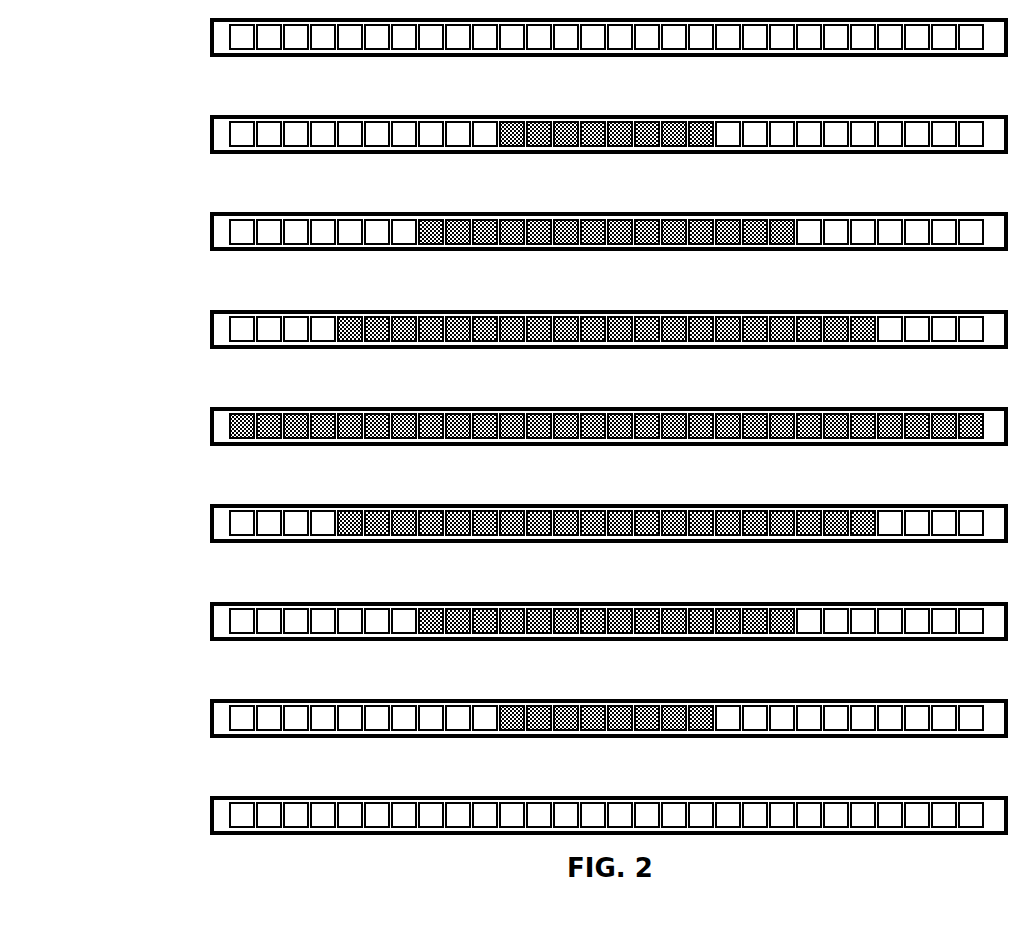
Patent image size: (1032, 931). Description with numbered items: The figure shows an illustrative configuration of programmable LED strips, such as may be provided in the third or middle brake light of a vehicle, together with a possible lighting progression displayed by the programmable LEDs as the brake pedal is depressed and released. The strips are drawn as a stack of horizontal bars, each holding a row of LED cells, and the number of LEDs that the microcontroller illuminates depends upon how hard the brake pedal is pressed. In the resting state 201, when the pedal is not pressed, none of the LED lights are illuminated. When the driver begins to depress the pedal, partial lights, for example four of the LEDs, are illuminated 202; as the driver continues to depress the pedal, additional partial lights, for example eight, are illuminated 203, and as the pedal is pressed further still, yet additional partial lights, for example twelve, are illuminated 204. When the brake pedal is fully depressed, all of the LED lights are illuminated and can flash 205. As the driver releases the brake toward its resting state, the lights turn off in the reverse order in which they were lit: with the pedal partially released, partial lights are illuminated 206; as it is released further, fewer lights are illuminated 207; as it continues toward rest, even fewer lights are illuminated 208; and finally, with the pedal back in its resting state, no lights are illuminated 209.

The resting state illumination configuration 201 is at (192, 38).
The partial lights illuminated configuration 202 is at (192, 135).
The additional partial lights illuminated configuration 203 is at (192, 232).
The further additional partial lights illuminated configuration 204 is at (192, 329).
The all LED lights flashing configuration 205 is at (192, 426).
The partially released partial lights configuration 206 is at (192, 524).
The fewer lights illuminated configuration 207 is at (192, 621).
The even fewer lights illuminated configuration 208 is at (192, 718).
The resting state no lights illuminated configuration 209 is at (192, 816).